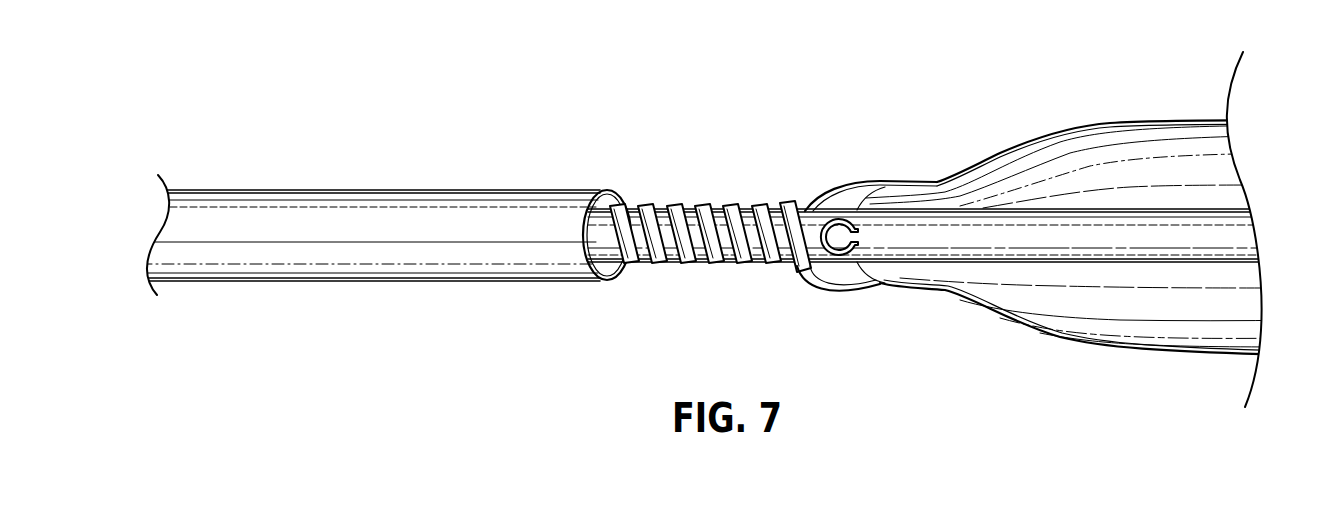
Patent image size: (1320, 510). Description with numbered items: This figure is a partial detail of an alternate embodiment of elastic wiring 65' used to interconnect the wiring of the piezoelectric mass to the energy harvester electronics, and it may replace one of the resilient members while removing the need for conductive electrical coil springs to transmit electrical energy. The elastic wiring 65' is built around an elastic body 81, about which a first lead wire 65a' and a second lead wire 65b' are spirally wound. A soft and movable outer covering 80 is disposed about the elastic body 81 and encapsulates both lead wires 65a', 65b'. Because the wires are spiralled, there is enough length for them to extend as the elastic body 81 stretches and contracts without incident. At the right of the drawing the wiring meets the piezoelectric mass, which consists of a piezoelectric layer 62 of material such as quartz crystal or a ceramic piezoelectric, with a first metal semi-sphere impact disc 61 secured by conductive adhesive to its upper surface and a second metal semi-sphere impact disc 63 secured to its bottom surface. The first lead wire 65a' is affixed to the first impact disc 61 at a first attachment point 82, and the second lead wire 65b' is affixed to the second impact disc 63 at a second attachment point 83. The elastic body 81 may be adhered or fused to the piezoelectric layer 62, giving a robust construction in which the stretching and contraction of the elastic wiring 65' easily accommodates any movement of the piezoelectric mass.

The outer covering 80 is at (388, 188).
The elastic wiring 65' is at (385, 251).
The first lead wire 65a' is at (655, 190).
The elastic body 81 is at (710, 245).
The second lead wire 65b' is at (740, 286).
The first attachment point 82 is at (903, 185).
The second attachment point 83 is at (883, 283).
The first metal semi-sphere impact disc 61 is at (1107, 157).
The piezoelectric layer 62 is at (1003, 238).
The second metal semi-sphere impact disc 63 is at (1120, 323).